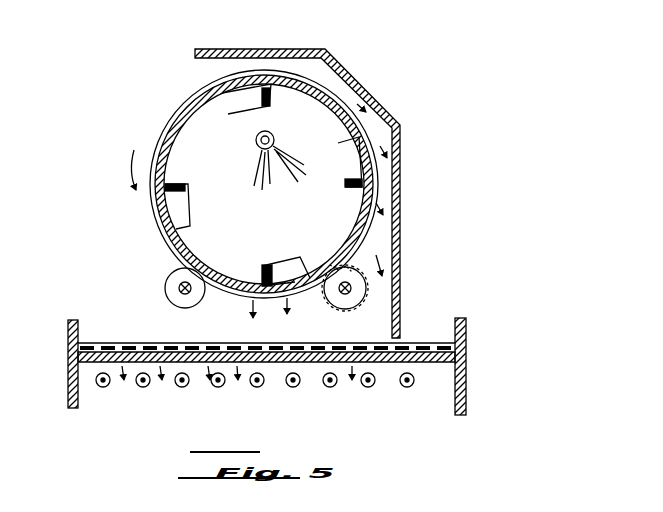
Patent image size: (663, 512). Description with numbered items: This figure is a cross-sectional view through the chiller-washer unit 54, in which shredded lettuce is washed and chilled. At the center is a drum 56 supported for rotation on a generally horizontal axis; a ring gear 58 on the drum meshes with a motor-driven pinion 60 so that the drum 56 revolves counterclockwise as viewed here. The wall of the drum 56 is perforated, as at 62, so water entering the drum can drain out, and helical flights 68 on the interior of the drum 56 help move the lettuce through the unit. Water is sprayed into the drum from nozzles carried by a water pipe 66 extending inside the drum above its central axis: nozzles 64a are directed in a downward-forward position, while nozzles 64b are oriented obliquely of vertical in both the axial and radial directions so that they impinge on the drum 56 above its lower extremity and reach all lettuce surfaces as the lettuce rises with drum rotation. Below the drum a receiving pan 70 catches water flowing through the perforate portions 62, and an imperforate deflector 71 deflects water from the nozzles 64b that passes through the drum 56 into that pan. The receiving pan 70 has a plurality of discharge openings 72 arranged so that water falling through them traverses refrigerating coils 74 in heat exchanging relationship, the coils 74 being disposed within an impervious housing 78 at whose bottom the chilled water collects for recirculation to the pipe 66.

The chiller-washer unit 54 is at (124, 76).
The drum 56 is at (163, 219).
The ring gear 58 is at (340, 264).
The pinion 60 is at (355, 300).
The perforate portions 62 is at (180, 104).
The nozzles 64a is at (256, 150).
The nozzles 64b is at (277, 148).
The water pipe 66 is at (271, 133).
The helical flights 68 is at (352, 178).
The receiving pan 70 is at (440, 364).
The imperforate deflector 71 is at (402, 168).
The discharge openings 72 is at (138, 352).
The refrigerating coils 74 is at (300, 378).
The impervious housing 78 is at (468, 391).